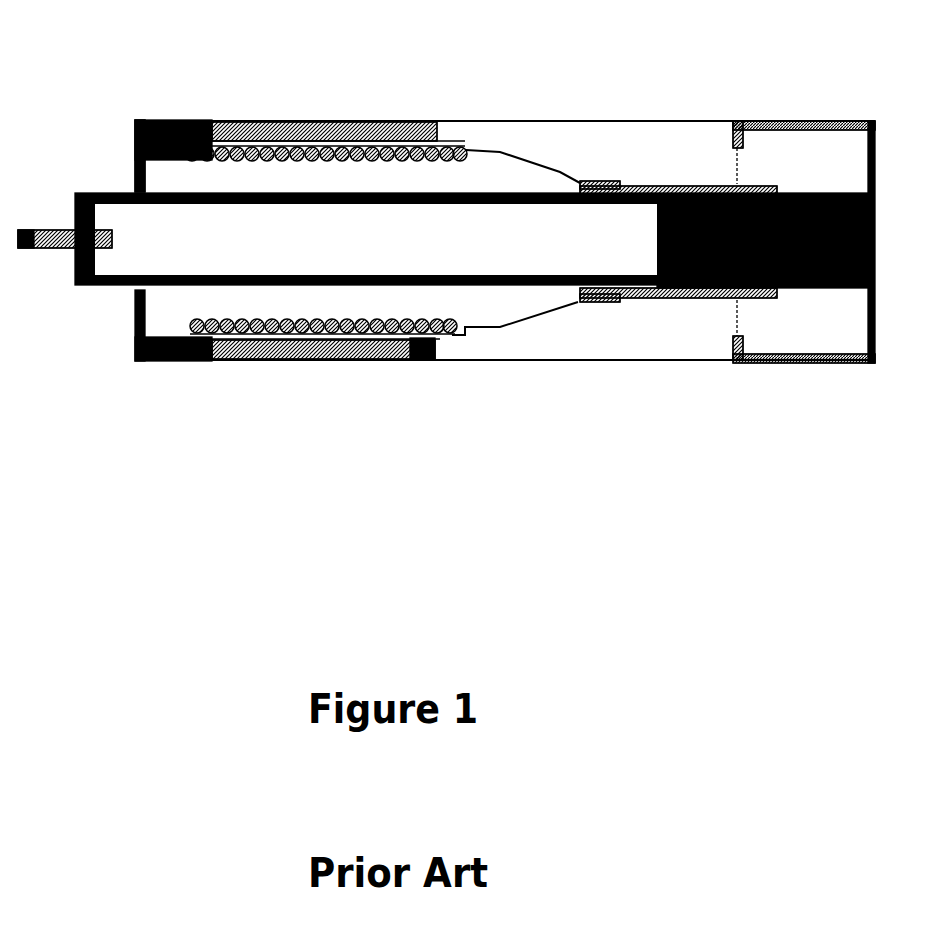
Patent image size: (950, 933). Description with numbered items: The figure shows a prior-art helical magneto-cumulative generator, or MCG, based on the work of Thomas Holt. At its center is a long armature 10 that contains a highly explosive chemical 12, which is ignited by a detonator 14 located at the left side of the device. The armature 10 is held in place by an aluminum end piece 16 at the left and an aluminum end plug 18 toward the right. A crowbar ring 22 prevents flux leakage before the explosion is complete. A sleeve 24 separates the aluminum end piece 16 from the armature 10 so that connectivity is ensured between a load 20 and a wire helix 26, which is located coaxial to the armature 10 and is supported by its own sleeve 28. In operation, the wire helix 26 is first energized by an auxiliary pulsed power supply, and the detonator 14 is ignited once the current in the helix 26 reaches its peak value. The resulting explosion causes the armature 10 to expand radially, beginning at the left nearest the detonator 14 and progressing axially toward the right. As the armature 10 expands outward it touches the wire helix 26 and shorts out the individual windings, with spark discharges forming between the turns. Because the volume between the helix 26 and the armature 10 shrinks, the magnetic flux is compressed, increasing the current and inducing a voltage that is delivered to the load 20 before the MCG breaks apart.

The armature 10 is at (471, 339).
The highly explosive chemical 12 is at (376, 176).
The detonator 14 is at (113, 361).
The aluminum end piece 16 is at (505, 307).
The aluminum end plug 18 is at (704, 118).
The load 20 is at (804, 224).
The crowbar ring 22 is at (194, 103).
The sleeve 24 is at (678, 356).
The wire helix 26 is at (382, 292).
The sleeve 28 is at (324, 204).